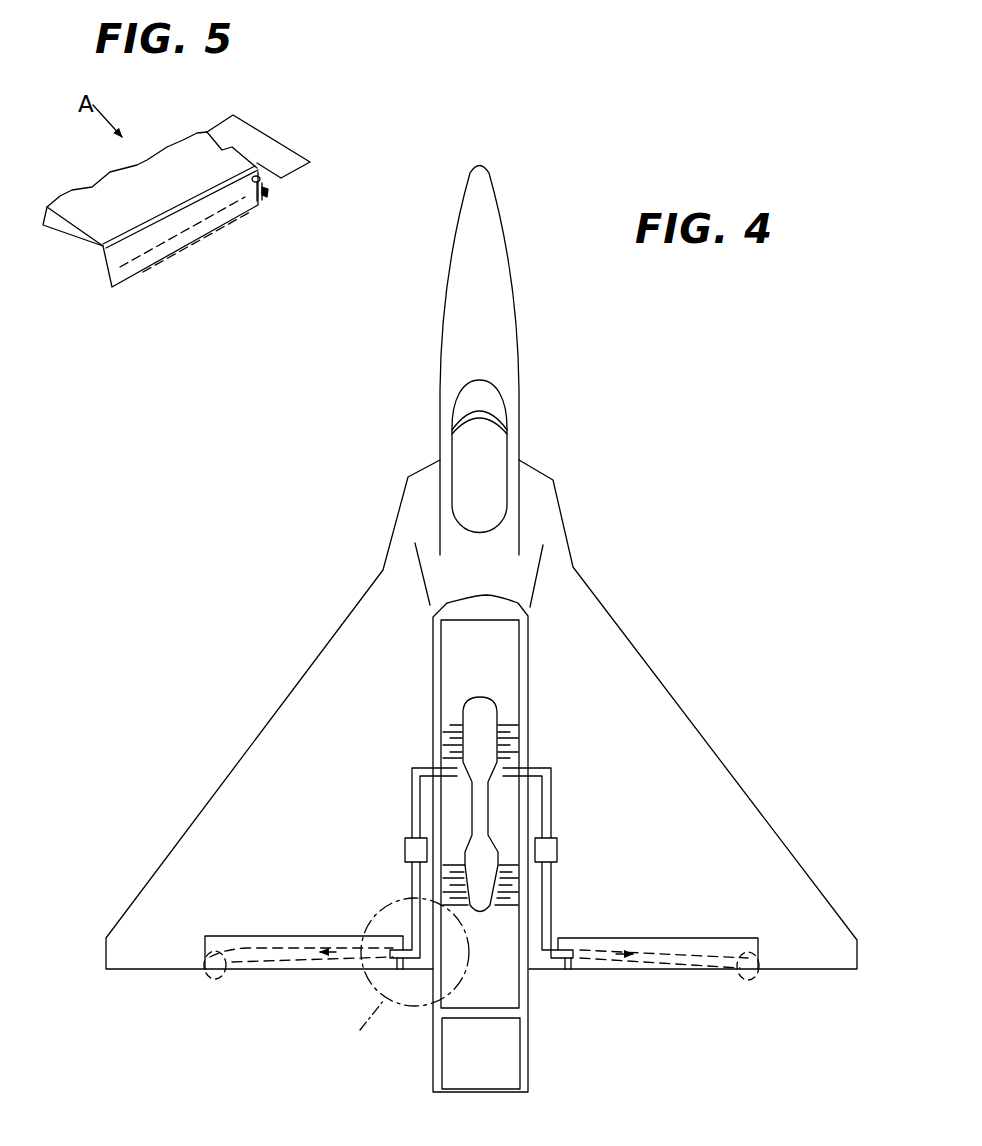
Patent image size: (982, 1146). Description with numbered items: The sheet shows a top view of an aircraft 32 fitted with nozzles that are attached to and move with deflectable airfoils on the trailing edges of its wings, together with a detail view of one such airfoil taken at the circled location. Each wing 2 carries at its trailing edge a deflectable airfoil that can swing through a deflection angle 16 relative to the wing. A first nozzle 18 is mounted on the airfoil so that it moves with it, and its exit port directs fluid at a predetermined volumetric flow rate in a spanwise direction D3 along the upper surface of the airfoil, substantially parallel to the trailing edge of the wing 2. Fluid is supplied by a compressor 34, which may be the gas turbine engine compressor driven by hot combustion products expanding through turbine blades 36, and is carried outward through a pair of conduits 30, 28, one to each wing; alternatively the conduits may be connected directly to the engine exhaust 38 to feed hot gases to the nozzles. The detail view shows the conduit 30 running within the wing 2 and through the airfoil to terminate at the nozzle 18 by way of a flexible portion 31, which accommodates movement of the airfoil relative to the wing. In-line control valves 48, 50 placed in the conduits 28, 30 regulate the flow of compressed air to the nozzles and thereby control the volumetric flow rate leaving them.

In FIG. 5, the wing 2 is at (88, 218).
In FIG. 5, the conduit 30 is at (243, 132).
In FIG. 4, the conduit 30 is at (412, 813).
In FIG. 5, the flexible portion 31 is at (262, 170).
In FIG. 5, the deflection angle 16 is at (270, 191).
In FIG. 5, the first nozzle 18 is at (260, 198).
In FIG. 4, the first nozzle 18 is at (400, 973).
In FIG. 5, the spanwise direction D3 is at (234, 197).
In FIG. 4, the spanwise direction D3 is at (345, 957).
In FIG. 4, the aircraft 32 is at (520, 380).
In FIG. 4, the compressor 34 is at (498, 722).
In FIG. 4, the turbine blades 36 is at (508, 882).
In FIG. 4, the conduit 28 is at (550, 813).
In FIG. 4, the in-line control valve 48 is at (557, 855).
In FIG. 4, the in-line control valve 50 is at (405, 852).
In FIG. 4, the exhaust nozzle 38 is at (510, 1055).